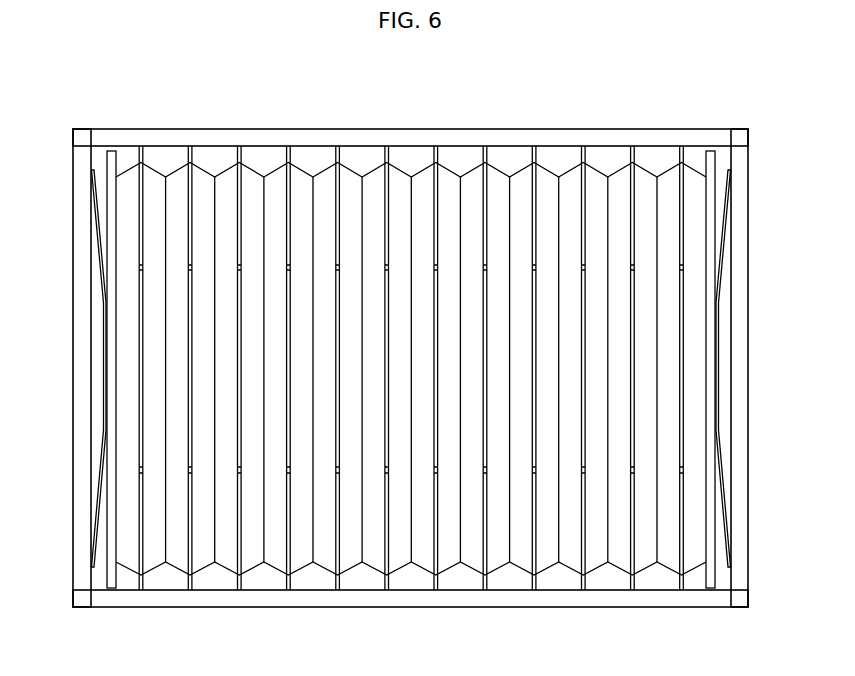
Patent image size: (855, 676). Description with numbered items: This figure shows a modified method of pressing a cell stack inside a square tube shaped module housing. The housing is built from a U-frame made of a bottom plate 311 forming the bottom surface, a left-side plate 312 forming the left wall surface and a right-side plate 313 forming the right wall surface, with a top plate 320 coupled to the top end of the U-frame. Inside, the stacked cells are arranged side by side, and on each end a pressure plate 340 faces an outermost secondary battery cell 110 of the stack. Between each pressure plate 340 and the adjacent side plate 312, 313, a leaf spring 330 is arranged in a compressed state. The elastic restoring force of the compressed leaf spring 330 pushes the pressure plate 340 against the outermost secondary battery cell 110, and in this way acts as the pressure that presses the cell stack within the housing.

The secondary battery cell 110 is at (123, 558).
The bottom plate 311 is at (246, 608).
The left-side plate 312 is at (73, 350).
The right-side plate 313 is at (748, 350).
The top plate 320 is at (633, 129).
The leaf spring 330 is at (100, 478).
The pressure plate 340 is at (107, 529).